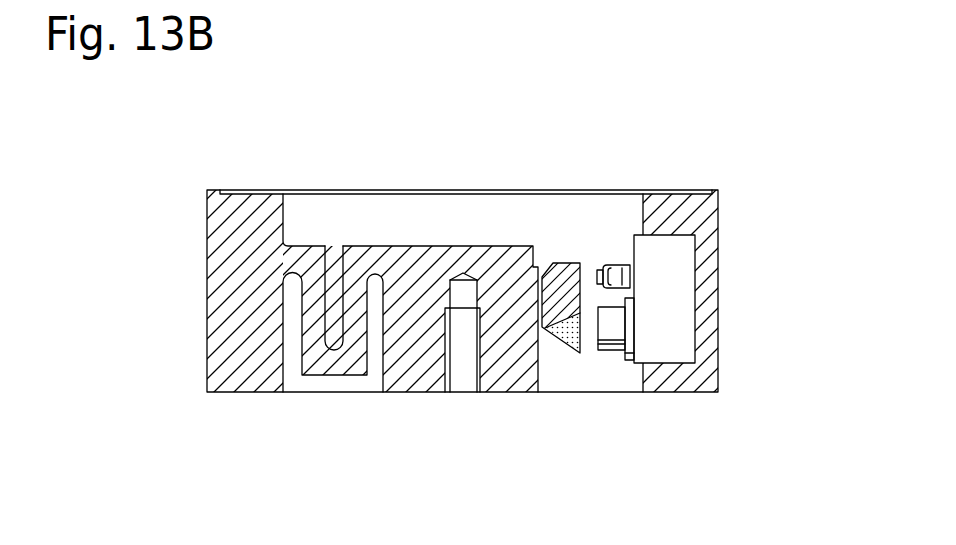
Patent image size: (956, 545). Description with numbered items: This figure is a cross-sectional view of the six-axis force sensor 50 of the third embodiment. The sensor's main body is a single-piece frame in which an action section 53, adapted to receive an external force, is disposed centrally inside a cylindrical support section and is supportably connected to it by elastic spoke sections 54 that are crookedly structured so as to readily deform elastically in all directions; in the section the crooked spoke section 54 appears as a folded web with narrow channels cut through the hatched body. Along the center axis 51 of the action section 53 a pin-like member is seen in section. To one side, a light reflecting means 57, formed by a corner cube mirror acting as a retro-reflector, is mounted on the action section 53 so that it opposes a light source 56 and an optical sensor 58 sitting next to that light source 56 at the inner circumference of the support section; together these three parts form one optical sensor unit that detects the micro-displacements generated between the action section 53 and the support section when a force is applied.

The six-axis force sensor 50 is at (186, 209).
The center axis 51 is at (463, 381).
The action section 53 is at (503, 244).
The elastic spoke section 54 is at (353, 250).
The light source 56 is at (620, 271).
The light reflecting means 57 is at (565, 275).
The optical sensor 58 is at (615, 323).